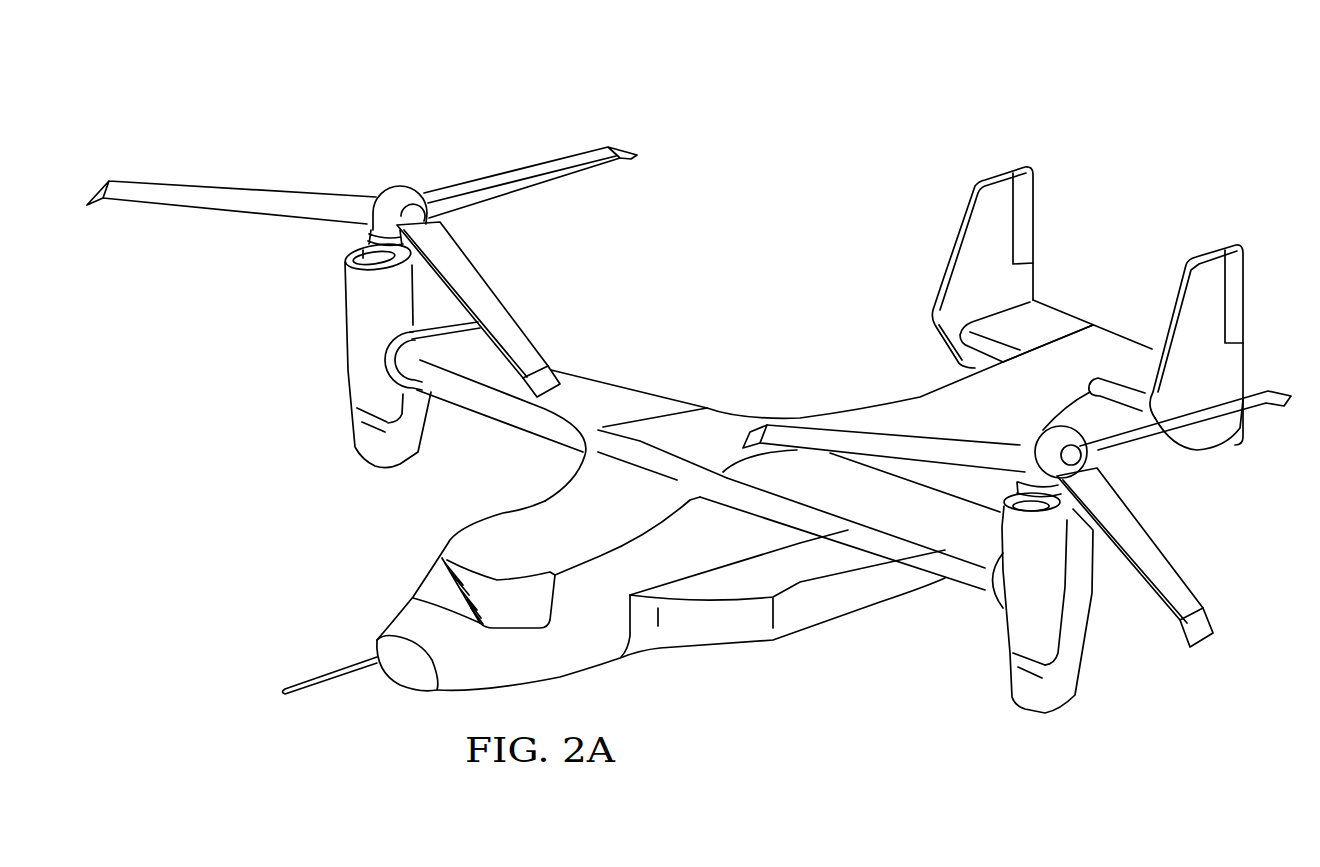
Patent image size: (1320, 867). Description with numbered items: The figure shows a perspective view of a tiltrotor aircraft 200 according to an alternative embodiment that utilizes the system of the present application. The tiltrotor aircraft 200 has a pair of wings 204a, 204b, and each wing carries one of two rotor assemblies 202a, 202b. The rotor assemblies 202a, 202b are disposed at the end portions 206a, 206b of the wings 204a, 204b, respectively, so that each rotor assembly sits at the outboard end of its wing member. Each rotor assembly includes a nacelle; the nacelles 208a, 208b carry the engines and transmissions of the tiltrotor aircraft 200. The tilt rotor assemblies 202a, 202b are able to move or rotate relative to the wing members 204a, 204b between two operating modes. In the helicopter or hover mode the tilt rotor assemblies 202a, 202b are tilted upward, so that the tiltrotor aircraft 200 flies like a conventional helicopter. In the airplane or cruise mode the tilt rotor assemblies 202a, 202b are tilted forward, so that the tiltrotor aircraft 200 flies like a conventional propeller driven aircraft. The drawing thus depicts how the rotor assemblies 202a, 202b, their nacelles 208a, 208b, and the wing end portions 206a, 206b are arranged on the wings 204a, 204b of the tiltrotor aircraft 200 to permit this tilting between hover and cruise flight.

The tiltrotor aircraft 200 is at (966, 104).
The rotor assembly 202a is at (312, 272).
The rotor assembly 202b is at (1150, 541).
The wing 204a is at (610, 383).
The wing 204b is at (840, 532).
The end portion 206a is at (455, 310).
The end portion 206b is at (986, 490).
The nacelle 208a is at (343, 371).
The nacelle 208b is at (1085, 652).